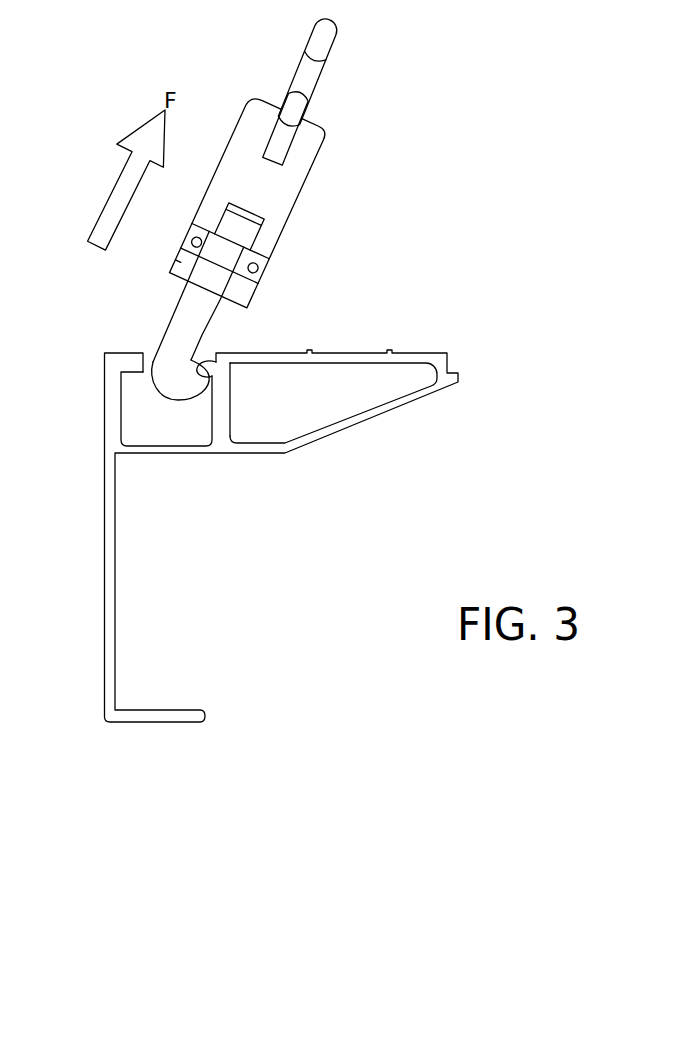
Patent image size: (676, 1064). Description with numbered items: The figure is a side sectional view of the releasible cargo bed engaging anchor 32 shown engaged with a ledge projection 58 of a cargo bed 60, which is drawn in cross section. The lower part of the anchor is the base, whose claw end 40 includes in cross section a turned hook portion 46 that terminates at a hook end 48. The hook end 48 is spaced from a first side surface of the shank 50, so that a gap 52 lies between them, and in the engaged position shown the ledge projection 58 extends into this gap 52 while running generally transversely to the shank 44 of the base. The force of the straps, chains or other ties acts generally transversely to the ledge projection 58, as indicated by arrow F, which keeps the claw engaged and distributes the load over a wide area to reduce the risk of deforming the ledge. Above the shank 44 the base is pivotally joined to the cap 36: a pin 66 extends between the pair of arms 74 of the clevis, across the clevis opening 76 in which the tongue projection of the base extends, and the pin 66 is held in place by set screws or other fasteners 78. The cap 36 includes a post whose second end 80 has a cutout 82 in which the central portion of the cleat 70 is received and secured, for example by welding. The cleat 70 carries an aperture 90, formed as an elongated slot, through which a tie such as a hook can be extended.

The anchor 32 is at (458, 229).
The cap 36 is at (289, 215).
The claw end 40 is at (170, 393).
The shank 44 is at (164, 338).
The turned hook portion 46 is at (192, 388).
The hook end 48 is at (218, 375).
The first side surface of the shank 50 is at (211, 320).
The gap 52 is at (215, 340).
The ledge projection 58 is at (214, 360).
The cargo bed 60 is at (405, 352).
The pin 66 is at (230, 258).
The cleat 70 is at (333, 44).
The arms 74 is at (175, 261).
The clevis opening 76 is at (168, 286).
The fasteners 78 is at (193, 238).
The second end 80 is at (323, 133).
The cutout 82 is at (283, 165).
The aperture 90 is at (333, 86).